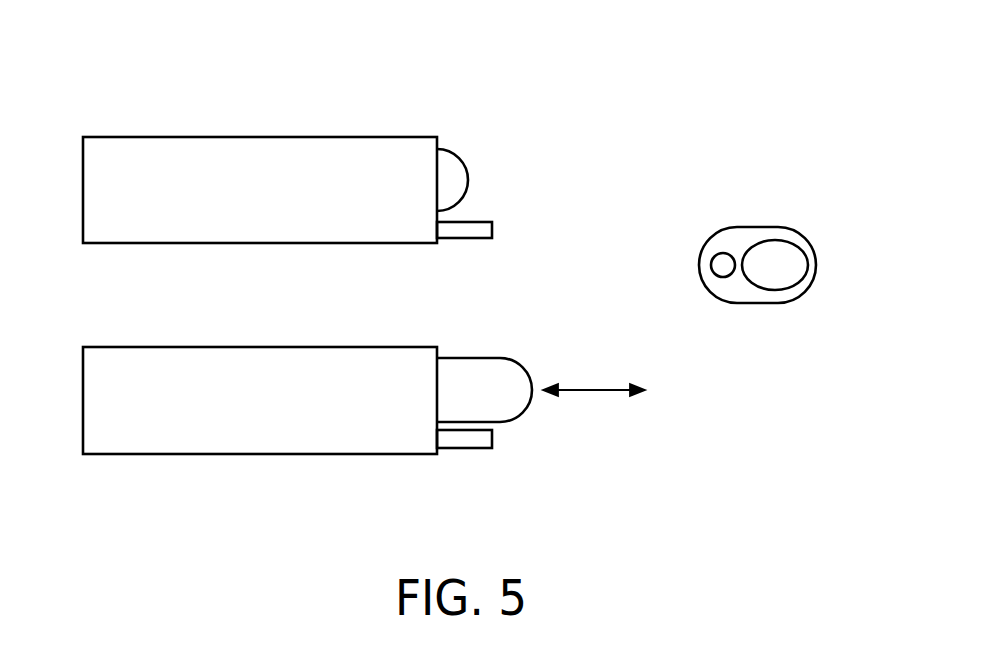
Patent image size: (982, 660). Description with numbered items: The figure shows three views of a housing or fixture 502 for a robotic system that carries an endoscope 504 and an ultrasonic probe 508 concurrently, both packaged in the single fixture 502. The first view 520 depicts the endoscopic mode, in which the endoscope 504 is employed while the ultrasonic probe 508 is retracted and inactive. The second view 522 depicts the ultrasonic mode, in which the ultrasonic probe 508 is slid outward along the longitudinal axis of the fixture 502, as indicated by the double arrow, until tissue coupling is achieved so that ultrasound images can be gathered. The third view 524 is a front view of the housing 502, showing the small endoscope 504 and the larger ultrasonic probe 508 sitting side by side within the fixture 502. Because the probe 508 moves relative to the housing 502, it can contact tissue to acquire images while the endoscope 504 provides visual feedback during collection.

The housing or fixture 502 is at (274, 203).
The endoscope 504 is at (492, 230).
The ultrasonic probe 508 is at (463, 161).
The first view 520 is at (163, 117).
The second view 522 is at (163, 473).
The third view 524 is at (708, 228).